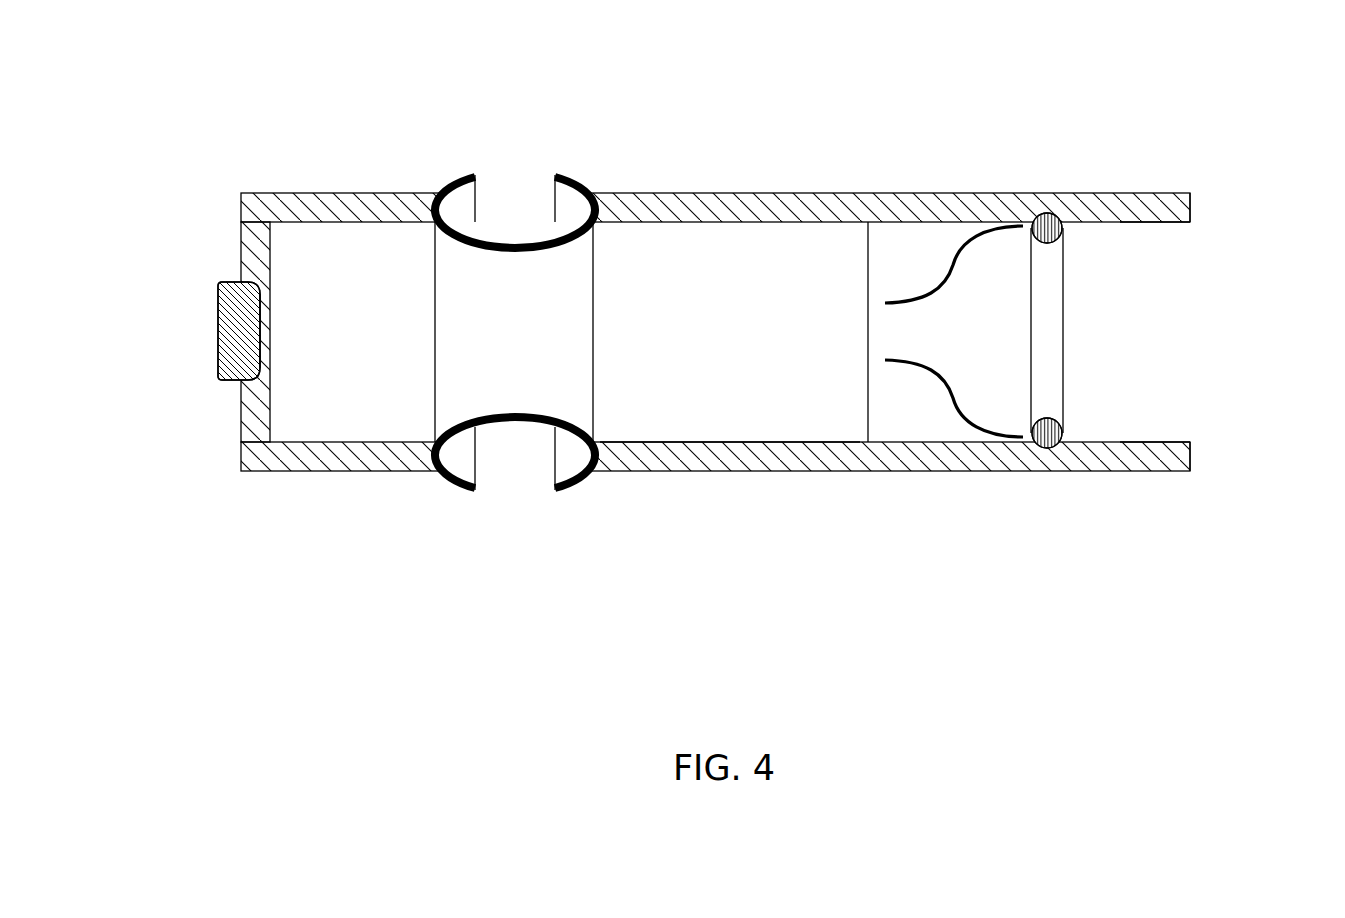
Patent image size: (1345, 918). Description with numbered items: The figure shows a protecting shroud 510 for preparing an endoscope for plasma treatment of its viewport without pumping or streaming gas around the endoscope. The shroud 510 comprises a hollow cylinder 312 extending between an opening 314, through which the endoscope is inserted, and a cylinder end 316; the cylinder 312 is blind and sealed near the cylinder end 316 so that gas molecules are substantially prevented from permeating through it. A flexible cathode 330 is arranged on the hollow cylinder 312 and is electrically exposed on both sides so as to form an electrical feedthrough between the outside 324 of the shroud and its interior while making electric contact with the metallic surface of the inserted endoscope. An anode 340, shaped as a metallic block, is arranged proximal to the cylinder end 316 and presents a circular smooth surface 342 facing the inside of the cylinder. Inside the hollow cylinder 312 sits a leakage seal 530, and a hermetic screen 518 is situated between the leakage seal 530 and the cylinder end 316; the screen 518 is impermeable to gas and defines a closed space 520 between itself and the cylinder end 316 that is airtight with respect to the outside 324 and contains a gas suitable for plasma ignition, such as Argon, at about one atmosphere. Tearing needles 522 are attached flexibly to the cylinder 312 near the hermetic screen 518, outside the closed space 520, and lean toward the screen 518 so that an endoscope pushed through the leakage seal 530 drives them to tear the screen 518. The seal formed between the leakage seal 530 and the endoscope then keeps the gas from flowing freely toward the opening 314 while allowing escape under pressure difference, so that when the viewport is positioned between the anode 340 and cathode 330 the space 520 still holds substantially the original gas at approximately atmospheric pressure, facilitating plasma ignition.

The hollow cylinder 312 is at (407, 471).
The opening 314 is at (1167, 268).
The cylinder end 316 is at (265, 193).
The outside 324 is at (1175, 400).
The cathode 330 is at (575, 177).
The anode 340 is at (217, 335).
The surface 342 is at (262, 328).
The protecting shroud 510 is at (327, 193).
The hermetic screen 518 is at (866, 246).
The closed space 520 is at (737, 428).
The tearing needles 522 is at (957, 256).
The leakage seal 530 is at (1040, 447).